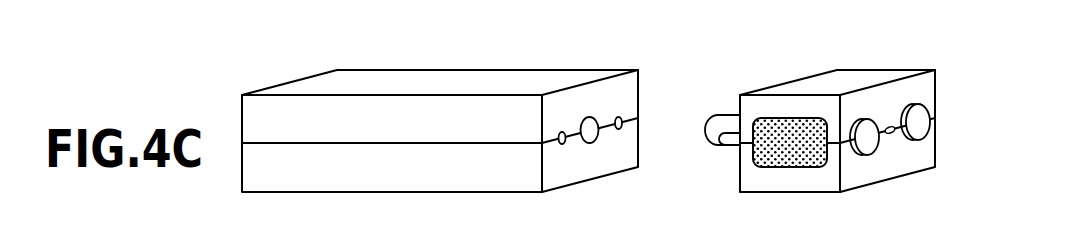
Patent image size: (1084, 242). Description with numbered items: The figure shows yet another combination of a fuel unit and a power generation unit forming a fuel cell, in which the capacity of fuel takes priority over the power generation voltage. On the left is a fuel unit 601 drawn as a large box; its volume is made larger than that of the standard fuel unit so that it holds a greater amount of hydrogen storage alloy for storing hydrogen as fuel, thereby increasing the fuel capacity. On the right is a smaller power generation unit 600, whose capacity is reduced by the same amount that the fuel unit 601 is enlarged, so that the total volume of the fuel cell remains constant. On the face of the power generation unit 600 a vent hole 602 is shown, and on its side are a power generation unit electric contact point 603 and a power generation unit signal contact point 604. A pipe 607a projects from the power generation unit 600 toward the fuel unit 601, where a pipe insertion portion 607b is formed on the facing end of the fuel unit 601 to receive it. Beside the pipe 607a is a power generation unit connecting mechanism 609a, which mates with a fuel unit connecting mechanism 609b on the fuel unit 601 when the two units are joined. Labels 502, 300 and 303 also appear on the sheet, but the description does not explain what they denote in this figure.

The fuel unit 601 is at (488, 69).
The power generation unit 600 is at (822, 70).
The vent hole 602 is at (790, 147).
The power generation unit electric contact point 603 is at (866, 117).
The power generation unit signal contact point 604 is at (890, 137).
The pipe 607a is at (728, 114).
The pipe insertion portion 607b is at (591, 143).
The power generation unit connecting mechanism 609a is at (733, 148).
The fuel unit connecting mechanism 609b is at (562, 132).
The element 502 is at (608, 9).
The element 300 is at (806, 234).
The element 303 is at (926, 234).